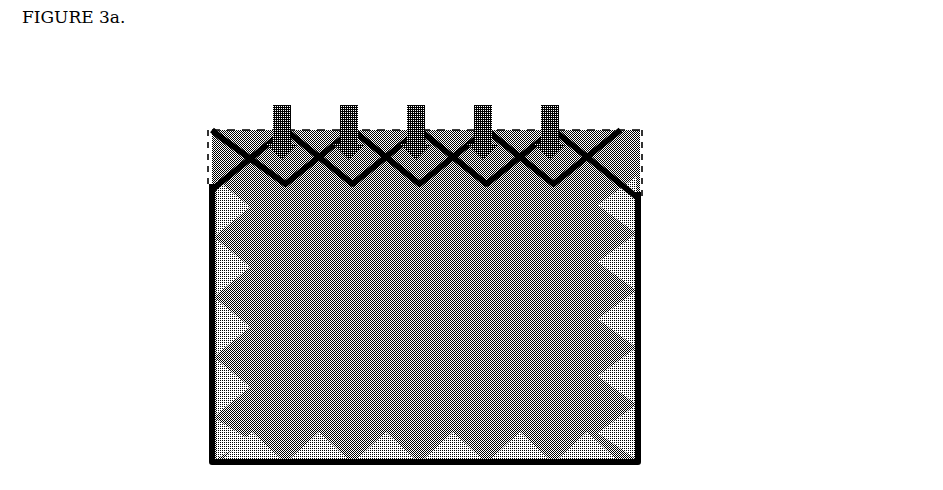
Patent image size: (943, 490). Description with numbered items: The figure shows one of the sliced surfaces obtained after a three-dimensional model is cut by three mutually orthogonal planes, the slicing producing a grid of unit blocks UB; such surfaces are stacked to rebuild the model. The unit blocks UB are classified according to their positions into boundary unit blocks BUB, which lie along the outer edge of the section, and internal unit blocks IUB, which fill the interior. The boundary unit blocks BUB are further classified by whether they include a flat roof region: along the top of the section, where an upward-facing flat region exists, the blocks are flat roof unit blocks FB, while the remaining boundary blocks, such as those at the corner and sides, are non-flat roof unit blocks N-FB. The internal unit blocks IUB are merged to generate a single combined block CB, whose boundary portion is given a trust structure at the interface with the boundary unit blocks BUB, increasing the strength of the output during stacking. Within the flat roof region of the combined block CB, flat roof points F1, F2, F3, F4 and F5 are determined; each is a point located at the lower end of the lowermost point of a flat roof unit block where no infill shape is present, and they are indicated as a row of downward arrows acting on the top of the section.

The flat roof unit block FB is at (581, 132).
The non-flat roof unit block N-FB is at (621, 150).
The unit block UB is at (590, 232).
The combined block CB is at (640, 322).
The boundary unit block BUB is at (207, 150).
The internal unit block IUB is at (273, 332).
The flat roof point F1 is at (282, 117).
The flat roof point F2 is at (349, 117).
The flat roof point F3 is at (416, 117).
The flat roof point F4 is at (483, 117).
The flat roof point F5 is at (550, 117).